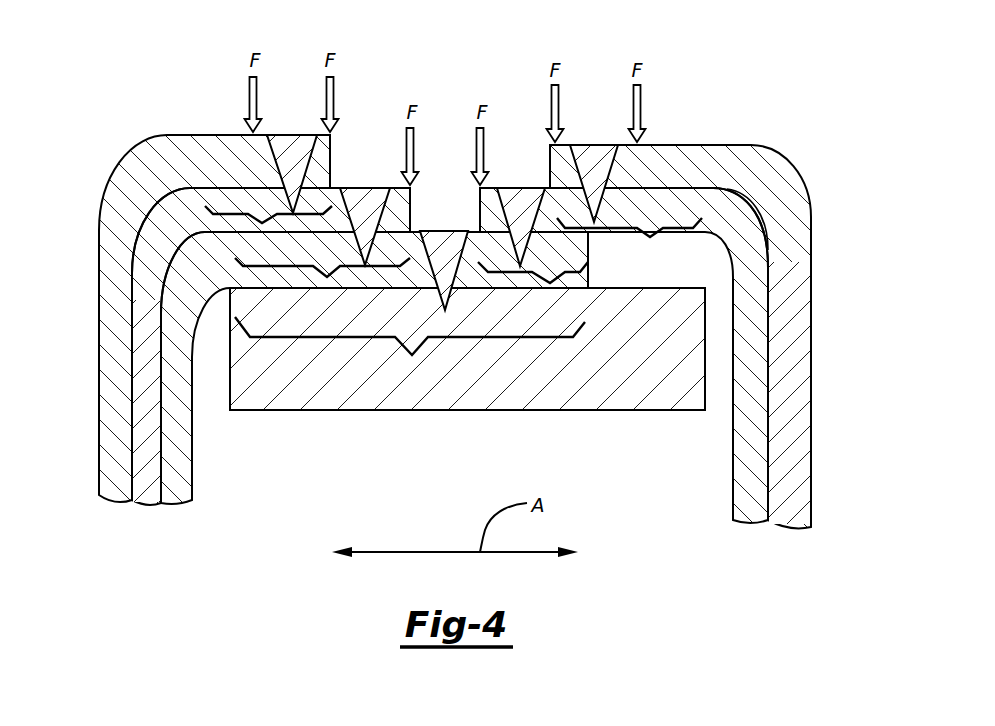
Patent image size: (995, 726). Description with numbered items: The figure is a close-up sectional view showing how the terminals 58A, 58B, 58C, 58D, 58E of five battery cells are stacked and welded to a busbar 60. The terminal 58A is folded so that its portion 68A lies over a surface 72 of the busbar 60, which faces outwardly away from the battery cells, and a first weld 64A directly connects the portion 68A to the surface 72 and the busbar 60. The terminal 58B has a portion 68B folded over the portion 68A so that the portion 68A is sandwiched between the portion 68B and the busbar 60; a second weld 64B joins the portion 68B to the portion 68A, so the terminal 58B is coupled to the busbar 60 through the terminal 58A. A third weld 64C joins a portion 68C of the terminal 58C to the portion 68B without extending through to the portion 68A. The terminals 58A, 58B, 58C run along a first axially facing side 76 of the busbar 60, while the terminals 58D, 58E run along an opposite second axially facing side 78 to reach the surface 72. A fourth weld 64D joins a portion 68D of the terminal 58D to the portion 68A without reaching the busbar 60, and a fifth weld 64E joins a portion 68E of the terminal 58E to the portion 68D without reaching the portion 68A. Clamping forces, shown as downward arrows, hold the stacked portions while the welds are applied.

The terminal 58A is at (177, 483).
The terminal 58B is at (147, 472).
The terminal 58C is at (122, 403).
The terminal 58D is at (753, 490).
The terminal 58E is at (788, 450).
The busbar 60 is at (582, 370).
The first weld 64A is at (443, 231).
The second weld 64B is at (365, 188).
The third weld 64C is at (292, 135).
The fourth weld 64D is at (520, 188).
The fifth weld 64E is at (593, 145).
The portion 68A is at (412, 355).
The portion 68B is at (327, 277).
The portion 68C is at (262, 223).
The portion 68D is at (550, 283).
The portion 68E is at (648, 236).
The surface 72 is at (690, 288).
The first axially facing side 76 is at (230, 382).
The second axially facing side 78 is at (705, 382).